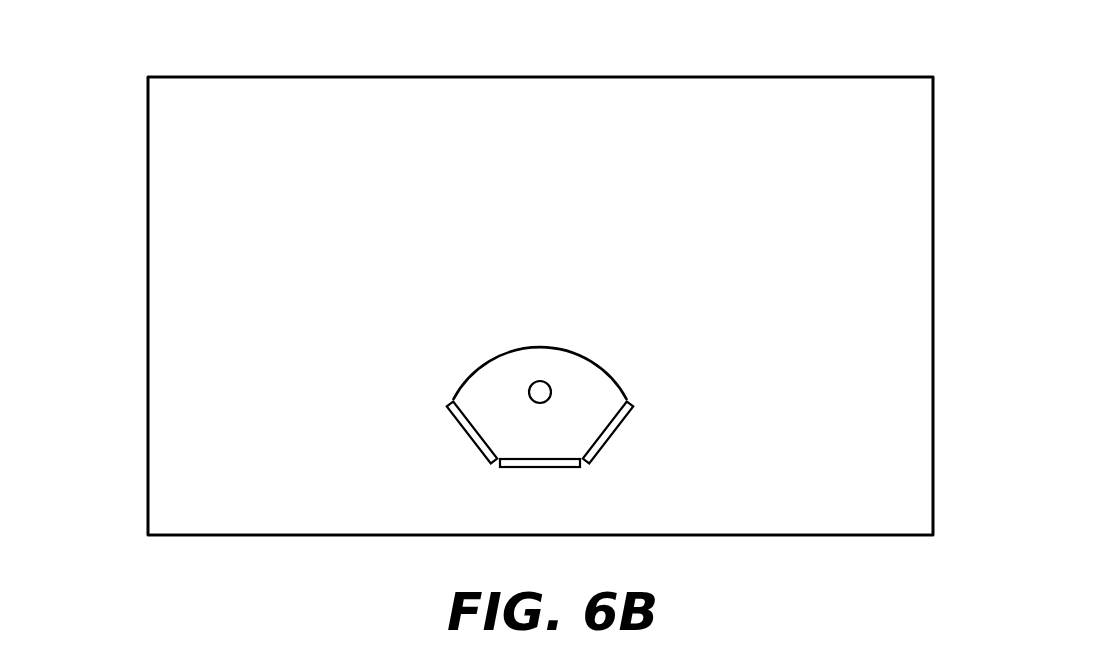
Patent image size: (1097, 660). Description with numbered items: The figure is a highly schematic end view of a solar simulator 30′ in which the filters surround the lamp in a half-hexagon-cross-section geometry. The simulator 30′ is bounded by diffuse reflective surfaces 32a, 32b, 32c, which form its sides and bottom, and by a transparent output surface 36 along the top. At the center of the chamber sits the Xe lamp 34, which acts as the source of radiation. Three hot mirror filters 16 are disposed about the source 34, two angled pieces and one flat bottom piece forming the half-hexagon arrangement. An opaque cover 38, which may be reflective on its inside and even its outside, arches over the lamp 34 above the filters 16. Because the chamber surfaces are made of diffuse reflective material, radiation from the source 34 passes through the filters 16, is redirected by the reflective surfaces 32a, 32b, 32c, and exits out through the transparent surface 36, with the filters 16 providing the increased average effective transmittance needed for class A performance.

The simulator 30′ is at (148, 322).
The transparent output surface 36 is at (846, 76).
The diffuse reflective surface 32a is at (148, 148).
The diffuse reflective surface 32b is at (807, 533).
The diffuse reflective surface 32c is at (933, 150).
The opaque cover 38 is at (573, 348).
The Xe lamp 34 is at (535, 372).
The hot mirror filter 16 is at (465, 434).